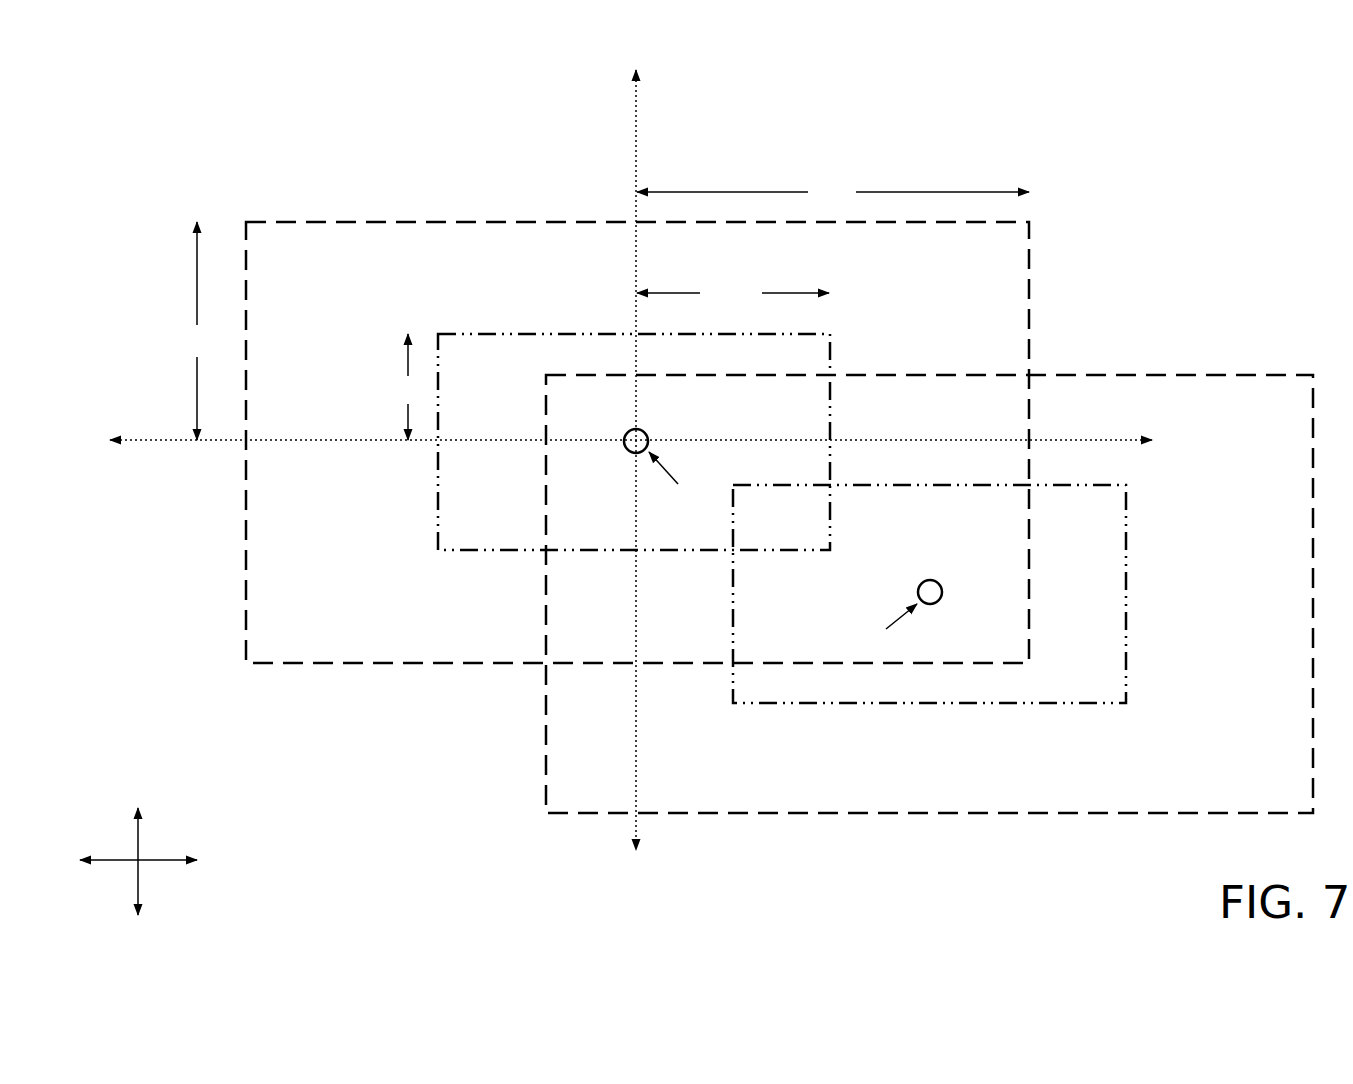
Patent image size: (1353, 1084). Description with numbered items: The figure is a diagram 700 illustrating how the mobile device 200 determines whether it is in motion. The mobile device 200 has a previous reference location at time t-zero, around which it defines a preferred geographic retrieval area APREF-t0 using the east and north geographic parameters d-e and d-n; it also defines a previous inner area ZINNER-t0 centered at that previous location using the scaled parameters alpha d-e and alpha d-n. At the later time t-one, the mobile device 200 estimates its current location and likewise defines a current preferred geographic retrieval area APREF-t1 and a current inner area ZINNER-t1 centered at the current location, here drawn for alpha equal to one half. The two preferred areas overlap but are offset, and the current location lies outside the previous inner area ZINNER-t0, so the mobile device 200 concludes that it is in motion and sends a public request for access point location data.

The diagram 700 is at (1224, 166).
The mobile device 200 is at (631, 430).
The preferred geographic retrieval area at time t0 APREF-t0 is at (287, 221).
The preferred geographic retrieval area at time t1 APREF-t1 is at (581, 814).
The previous inner area ZINNER-t0 is at (613, 333).
The current inner area ZINNER-t1 is at (961, 704).